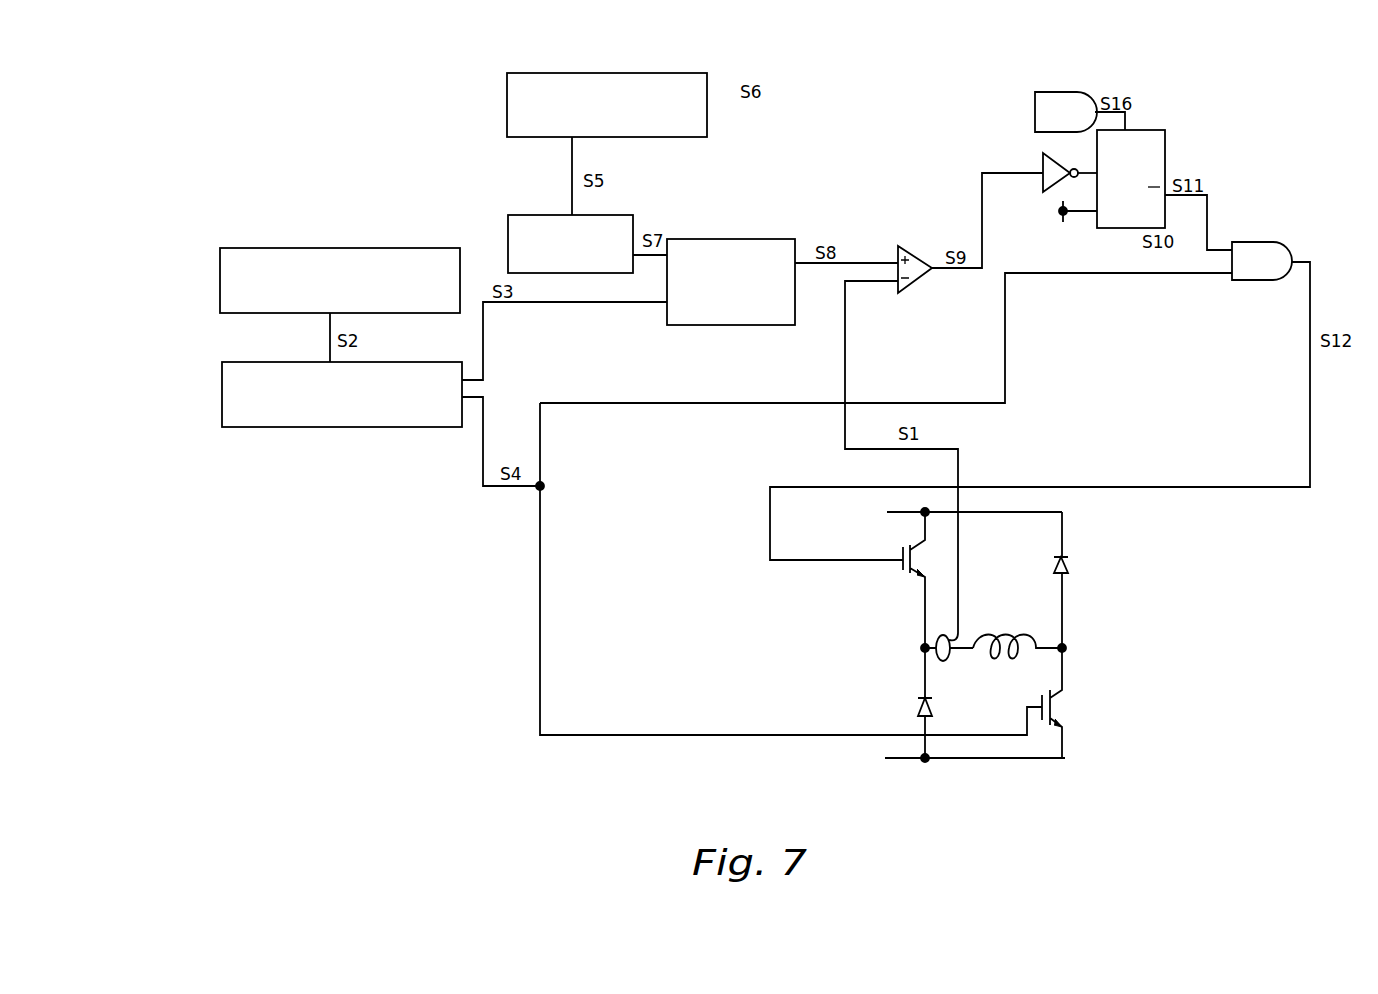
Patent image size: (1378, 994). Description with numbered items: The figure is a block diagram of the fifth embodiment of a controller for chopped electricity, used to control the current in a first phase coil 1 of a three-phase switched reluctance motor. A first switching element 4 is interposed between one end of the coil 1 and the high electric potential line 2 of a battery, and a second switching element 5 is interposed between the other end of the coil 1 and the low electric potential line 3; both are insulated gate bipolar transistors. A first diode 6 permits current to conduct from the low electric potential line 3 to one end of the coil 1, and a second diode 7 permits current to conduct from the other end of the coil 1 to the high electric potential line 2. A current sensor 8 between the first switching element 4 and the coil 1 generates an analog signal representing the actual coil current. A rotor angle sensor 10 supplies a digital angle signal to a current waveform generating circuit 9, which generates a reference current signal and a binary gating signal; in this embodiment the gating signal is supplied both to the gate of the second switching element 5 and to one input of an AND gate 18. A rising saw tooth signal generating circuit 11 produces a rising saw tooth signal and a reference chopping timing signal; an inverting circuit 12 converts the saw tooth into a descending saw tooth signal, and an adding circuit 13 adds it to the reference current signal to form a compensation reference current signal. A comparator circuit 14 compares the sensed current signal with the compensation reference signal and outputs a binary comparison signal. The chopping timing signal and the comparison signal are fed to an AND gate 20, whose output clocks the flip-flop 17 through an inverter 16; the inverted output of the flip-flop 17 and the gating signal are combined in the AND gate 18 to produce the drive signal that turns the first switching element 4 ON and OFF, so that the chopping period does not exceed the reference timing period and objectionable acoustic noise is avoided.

The first phase coil 1 is at (994, 673).
The high electric potential line 2 is at (901, 519).
The low electric potential line 3 is at (919, 764).
The first switching element 4 is at (896, 576).
The second switching element 5 is at (1059, 707).
The first diode 6 is at (914, 708).
The second diode 7 is at (1073, 567).
The current sensor 8 is at (966, 639).
The current waveform generating circuit 9 is at (278, 430).
The rotor angle sensor 10 is at (297, 246).
The rising saw tooth signal generating circuit 11 is at (606, 71).
The inverting circuit 12 is at (505, 235).
The adding circuit 13 is at (749, 237).
The comparator circuit 14 is at (912, 247).
The inverter 16 is at (1039, 160).
The flip-flop 17 is at (1169, 147).
The AND gate 18 is at (1264, 239).
The AND gate 20 is at (1062, 100).